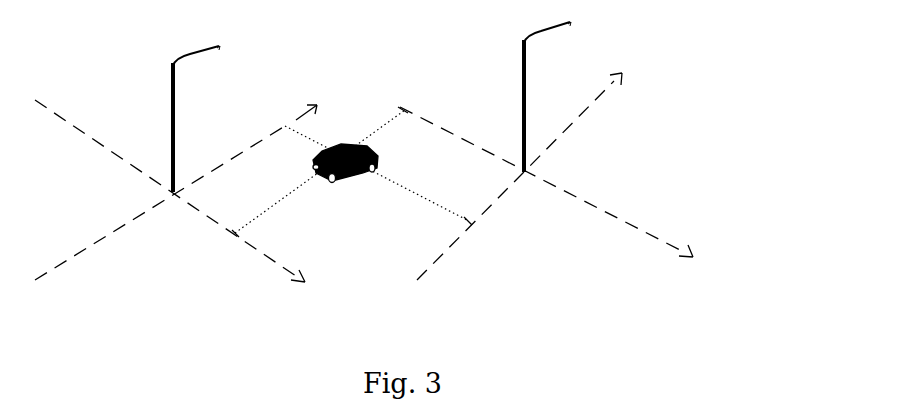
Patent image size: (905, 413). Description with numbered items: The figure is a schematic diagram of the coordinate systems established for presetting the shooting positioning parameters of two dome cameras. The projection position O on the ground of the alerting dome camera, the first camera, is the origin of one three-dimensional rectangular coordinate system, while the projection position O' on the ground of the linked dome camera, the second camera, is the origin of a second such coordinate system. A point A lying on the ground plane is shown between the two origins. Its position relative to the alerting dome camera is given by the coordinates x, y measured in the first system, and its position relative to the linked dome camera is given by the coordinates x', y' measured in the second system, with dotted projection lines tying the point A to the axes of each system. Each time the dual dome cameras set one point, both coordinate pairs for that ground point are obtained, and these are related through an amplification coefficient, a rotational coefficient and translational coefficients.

The point A is at (345, 174).
The projection position of alerting dome camera O is at (182, 175).
The projection position of linked dome camera O' is at (565, 151).
The x coordinate x is at (238, 249).
The y coordinate y is at (270, 114).
The x' coordinate x' is at (412, 103).
The y' coordinate y' is at (478, 232).